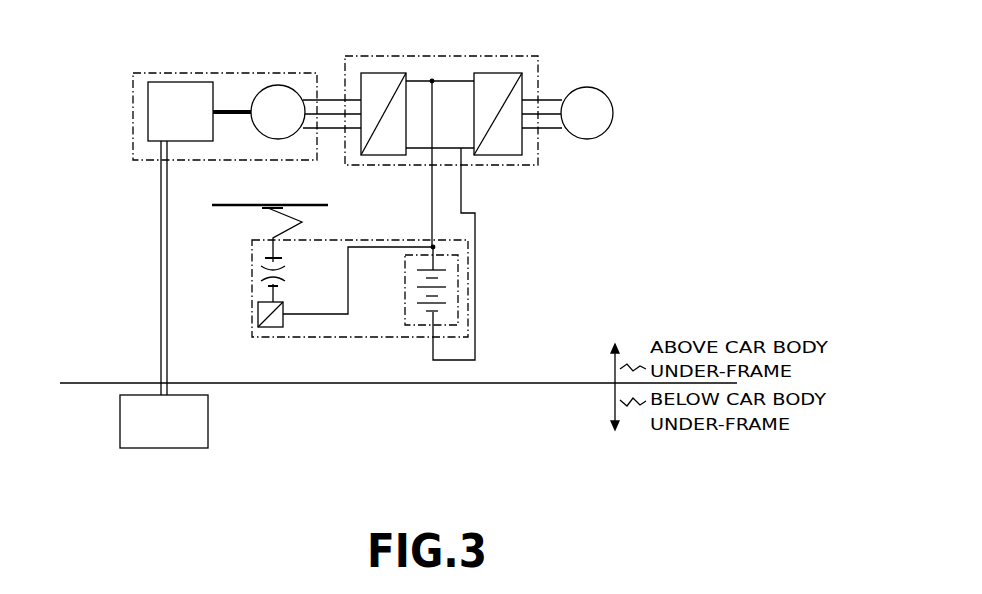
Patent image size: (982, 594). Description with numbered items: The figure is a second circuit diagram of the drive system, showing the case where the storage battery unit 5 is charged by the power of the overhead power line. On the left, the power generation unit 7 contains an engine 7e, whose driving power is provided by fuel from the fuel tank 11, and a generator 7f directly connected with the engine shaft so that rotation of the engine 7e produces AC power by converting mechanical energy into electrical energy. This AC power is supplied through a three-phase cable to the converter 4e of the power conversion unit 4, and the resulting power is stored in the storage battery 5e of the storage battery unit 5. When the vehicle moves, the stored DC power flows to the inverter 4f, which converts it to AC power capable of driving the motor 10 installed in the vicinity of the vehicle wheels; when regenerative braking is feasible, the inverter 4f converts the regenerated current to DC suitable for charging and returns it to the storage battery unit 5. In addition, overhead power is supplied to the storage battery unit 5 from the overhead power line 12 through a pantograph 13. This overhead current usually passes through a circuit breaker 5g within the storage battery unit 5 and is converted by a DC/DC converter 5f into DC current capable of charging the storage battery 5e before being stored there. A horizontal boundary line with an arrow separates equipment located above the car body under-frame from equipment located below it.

The power generation unit 7 is at (225, 95).
The engine 7e is at (176, 92).
The generator 7f is at (274, 90).
The power conversion unit 4 is at (441, 116).
The converter 4e is at (383, 89).
The inverter 4f is at (495, 94).
The motor 10 is at (596, 129).
The overhead power line 12 is at (270, 190).
The pantograph 13 is at (284, 217).
The storage battery unit 5 is at (362, 303).
The storage battery 5e is at (410, 286).
The DC/DC converter 5f is at (288, 334).
The circuit breaker 5g is at (245, 272).
The fuel tank 11 is at (164, 316).